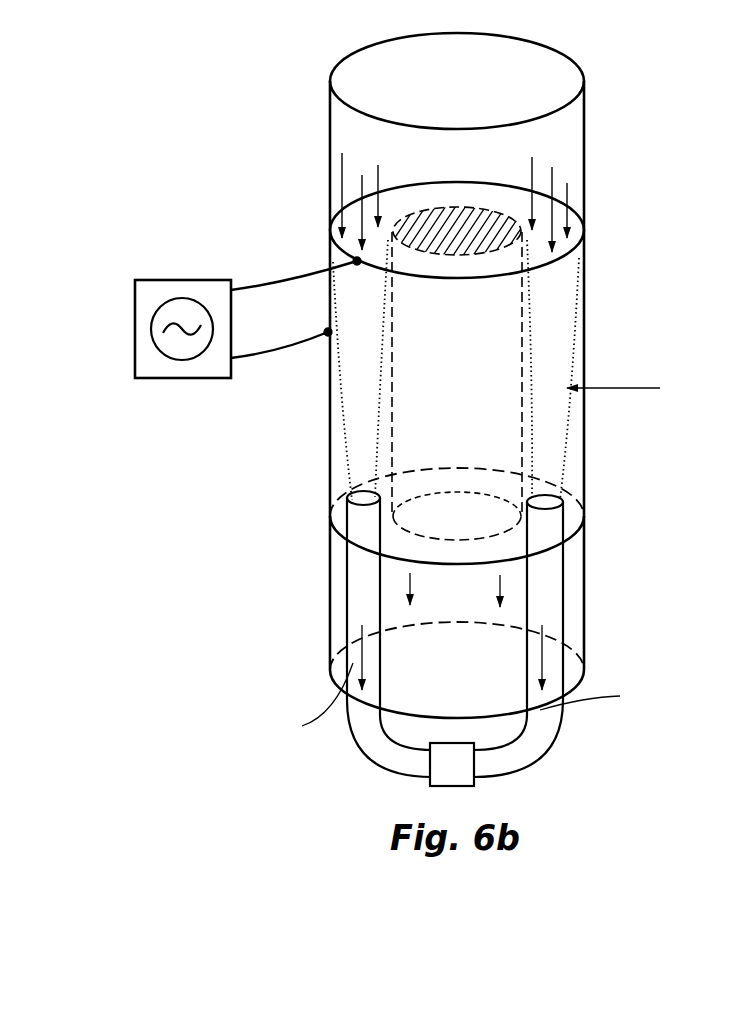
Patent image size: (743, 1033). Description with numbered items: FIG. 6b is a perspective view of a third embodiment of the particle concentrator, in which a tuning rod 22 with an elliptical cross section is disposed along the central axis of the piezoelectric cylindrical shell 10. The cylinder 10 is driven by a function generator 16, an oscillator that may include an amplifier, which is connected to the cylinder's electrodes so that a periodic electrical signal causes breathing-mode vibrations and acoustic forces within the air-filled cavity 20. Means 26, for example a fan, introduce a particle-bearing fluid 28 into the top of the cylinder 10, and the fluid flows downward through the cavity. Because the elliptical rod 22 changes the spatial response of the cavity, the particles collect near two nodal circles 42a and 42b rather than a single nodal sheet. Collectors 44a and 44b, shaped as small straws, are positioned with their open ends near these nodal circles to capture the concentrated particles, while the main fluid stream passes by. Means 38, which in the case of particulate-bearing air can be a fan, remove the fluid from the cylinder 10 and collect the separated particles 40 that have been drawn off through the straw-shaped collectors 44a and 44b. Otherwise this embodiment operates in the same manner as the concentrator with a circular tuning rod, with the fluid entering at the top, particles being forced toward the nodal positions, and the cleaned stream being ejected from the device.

The piezoelectric cylindrical shell 10 is at (585, 281).
The function generator 16 is at (183, 382).
The air-filled cavity 20 is at (388, 206).
The tuning rod 22 is at (390, 401).
The means for introducing a fluid 26 is at (328, 137).
The fluid 28 is at (454, 198).
The means for removing the fluid 38 is at (585, 596).
The separated particles 40 is at (452, 764).
The nodal circle 42a is at (350, 506).
The nodal circle 42b is at (555, 503).
The collector 44a is at (345, 596).
The collector 44b is at (566, 636).